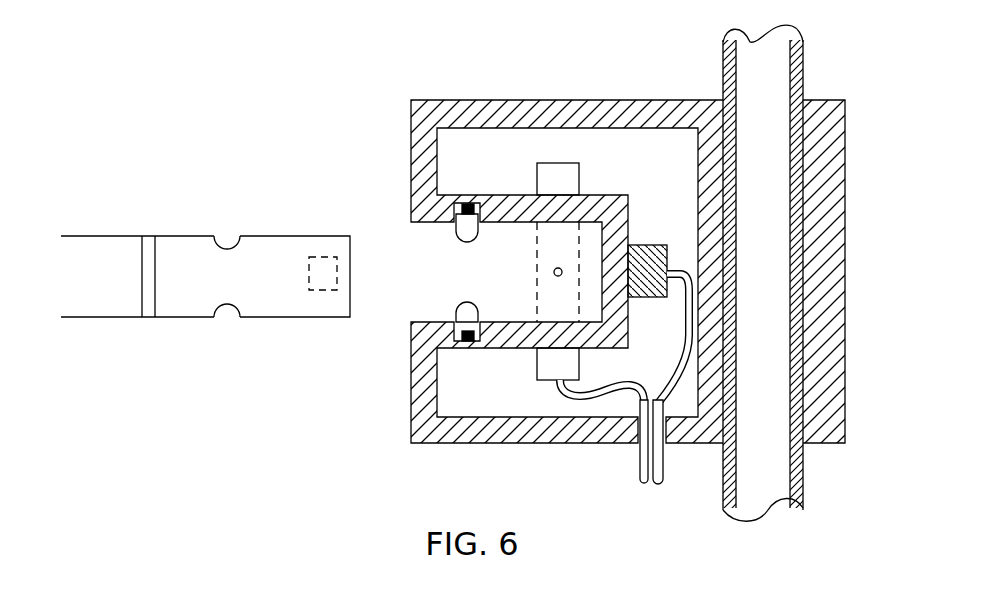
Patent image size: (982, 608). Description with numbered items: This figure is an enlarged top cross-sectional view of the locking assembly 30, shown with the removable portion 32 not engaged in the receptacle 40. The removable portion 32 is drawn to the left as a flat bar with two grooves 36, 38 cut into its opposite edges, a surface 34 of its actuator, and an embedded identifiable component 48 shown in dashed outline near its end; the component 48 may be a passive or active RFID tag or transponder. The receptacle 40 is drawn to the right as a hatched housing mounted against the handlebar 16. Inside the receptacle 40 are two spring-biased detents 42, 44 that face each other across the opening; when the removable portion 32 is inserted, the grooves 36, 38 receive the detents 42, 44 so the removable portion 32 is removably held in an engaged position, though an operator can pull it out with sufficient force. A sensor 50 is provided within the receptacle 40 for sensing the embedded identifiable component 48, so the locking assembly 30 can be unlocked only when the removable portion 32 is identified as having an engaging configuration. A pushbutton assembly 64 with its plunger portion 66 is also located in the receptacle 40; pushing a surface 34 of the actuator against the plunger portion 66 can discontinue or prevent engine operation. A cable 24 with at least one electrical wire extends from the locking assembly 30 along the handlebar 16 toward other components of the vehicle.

The handlebar 16 is at (723, 70).
The cable 24 is at (638, 462).
The locking assembly 30 is at (194, 224).
The removable portion 32 is at (98, 330).
The surface 34 is at (277, 270).
The groove 36 is at (227, 247).
The groove 38 is at (228, 305).
The receptacle 40 is at (436, 97).
The detent 42 is at (457, 236).
The detent 44 is at (456, 315).
The embedded identifiable component 48 is at (325, 283).
The sensor 50 is at (647, 244).
The pushbutton assembly 64 is at (537, 365).
The plunger portion 66 is at (554, 272).